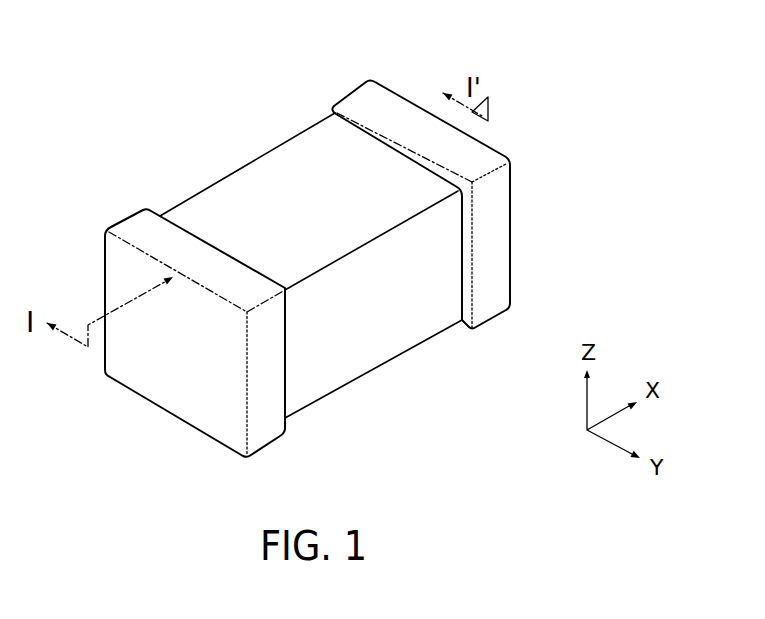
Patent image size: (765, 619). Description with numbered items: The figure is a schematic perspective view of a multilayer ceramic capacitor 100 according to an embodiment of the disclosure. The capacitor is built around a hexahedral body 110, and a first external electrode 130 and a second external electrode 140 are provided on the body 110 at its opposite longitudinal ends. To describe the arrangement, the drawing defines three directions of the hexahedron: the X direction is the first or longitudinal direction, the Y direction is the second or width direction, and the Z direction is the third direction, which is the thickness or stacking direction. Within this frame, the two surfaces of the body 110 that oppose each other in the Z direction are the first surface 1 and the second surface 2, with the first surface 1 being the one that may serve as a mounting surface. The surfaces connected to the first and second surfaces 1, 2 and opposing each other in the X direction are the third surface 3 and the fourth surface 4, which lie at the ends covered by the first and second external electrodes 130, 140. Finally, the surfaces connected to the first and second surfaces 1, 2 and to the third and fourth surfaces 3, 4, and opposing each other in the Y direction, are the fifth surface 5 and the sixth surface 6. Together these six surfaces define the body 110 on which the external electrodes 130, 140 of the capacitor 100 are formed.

The multilayer ceramic capacitor 100 is at (142, 36).
The body 110 is at (265, 176).
The first external electrode 130 is at (132, 224).
The second external electrode 140 is at (356, 99).
The first surface 1 is at (369, 383).
The second surface 2 is at (315, 176).
The third surface 3 is at (170, 380).
The fourth surface 4 is at (417, 96).
The fifth surface 5 is at (394, 321).
The sixth surface 6 is at (196, 192).